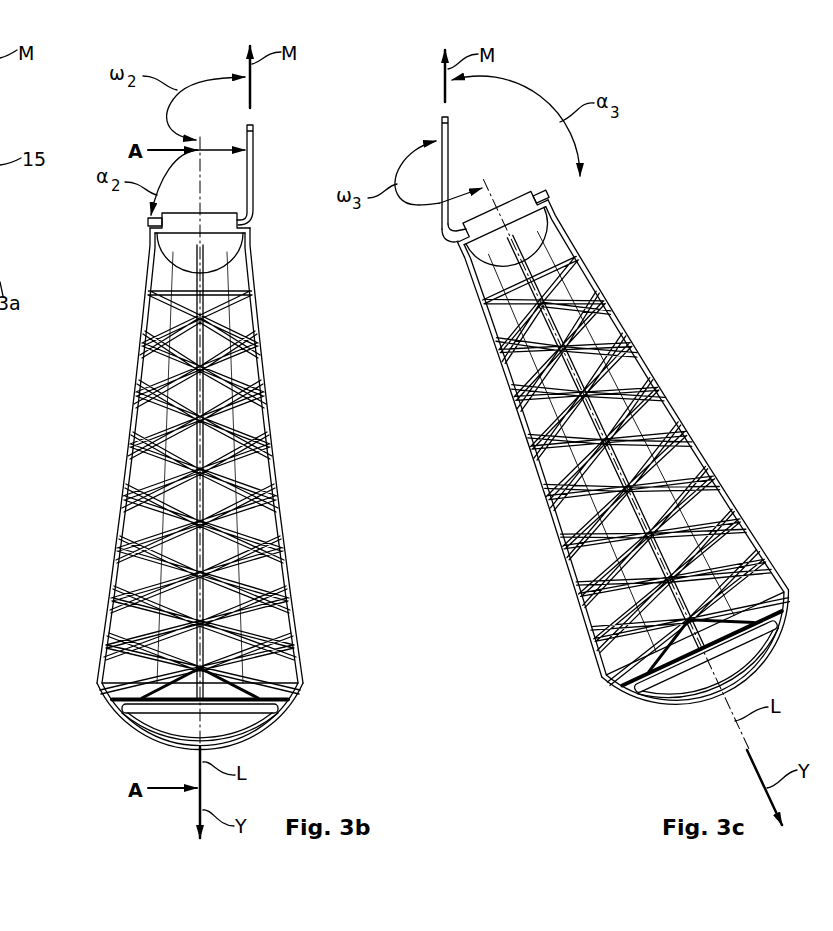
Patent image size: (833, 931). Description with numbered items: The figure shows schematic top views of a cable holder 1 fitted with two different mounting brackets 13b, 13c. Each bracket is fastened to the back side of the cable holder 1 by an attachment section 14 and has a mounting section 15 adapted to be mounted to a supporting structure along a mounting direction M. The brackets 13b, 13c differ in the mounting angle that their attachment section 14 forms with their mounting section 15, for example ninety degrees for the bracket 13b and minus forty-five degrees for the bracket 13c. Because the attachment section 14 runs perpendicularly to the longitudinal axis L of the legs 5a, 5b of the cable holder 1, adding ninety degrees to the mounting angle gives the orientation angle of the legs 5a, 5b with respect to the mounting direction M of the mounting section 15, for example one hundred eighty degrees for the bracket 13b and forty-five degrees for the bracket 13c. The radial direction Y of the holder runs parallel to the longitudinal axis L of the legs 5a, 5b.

In FIG. 3b, the cable holder 1 is at (121, 407).
In FIG. 3c, the cable holder 1 is at (637, 324).
In FIG. 3b, the leg 5a is at (157, 492).
In FIG. 3c, the leg 5a is at (636, 446).
In FIG. 3b, the leg 5b is at (107, 598).
In FIG. 3c, the leg 5b is at (696, 449).
In FIG. 3b, the mounting bracket 13b is at (256, 193).
In FIG. 3c, the mounting bracket 13c is at (447, 248).
In FIG. 3b, the attachment section 14 is at (146, 222).
In FIG. 3c, the mounting section 15 is at (441, 129).